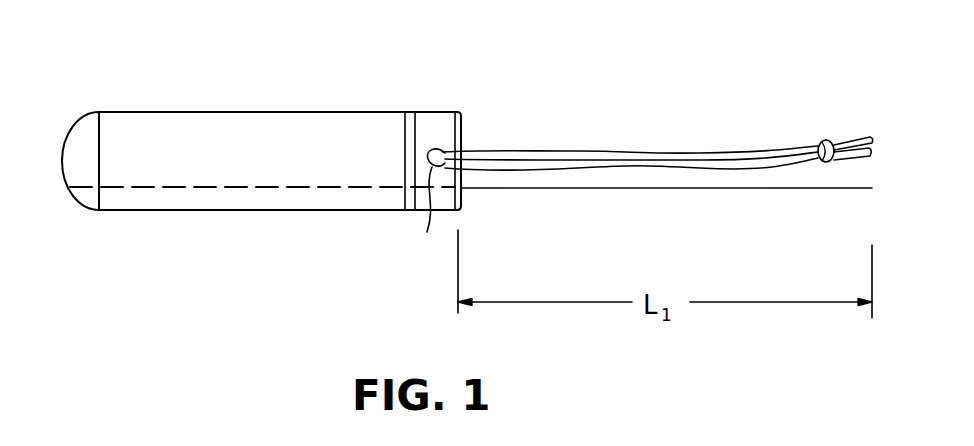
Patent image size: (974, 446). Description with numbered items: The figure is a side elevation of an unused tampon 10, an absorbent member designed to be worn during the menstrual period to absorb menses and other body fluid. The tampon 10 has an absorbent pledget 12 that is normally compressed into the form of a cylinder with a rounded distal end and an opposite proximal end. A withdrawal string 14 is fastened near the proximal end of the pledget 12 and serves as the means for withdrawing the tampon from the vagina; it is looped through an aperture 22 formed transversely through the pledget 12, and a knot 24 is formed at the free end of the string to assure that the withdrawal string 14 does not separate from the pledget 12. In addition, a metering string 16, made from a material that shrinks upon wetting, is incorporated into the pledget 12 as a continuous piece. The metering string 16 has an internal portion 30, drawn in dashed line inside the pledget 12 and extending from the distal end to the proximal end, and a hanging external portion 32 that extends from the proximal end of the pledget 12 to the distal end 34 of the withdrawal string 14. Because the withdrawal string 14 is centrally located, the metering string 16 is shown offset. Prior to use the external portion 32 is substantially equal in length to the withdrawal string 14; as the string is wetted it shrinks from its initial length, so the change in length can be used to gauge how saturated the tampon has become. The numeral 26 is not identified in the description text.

The tampon 10 is at (244, 90).
The absorbent pledget 12 is at (75, 130).
The withdrawal string 14 is at (735, 152).
The metering string 16 is at (285, 187).
The aperture 22 is at (426, 213).
The knot 24 is at (826, 140).
The body outer surface 26 is at (138, 198).
The internal portion 30 is at (243, 208).
The external portion 32 is at (614, 126).
The distal end of withdrawal string 34 is at (890, 166).